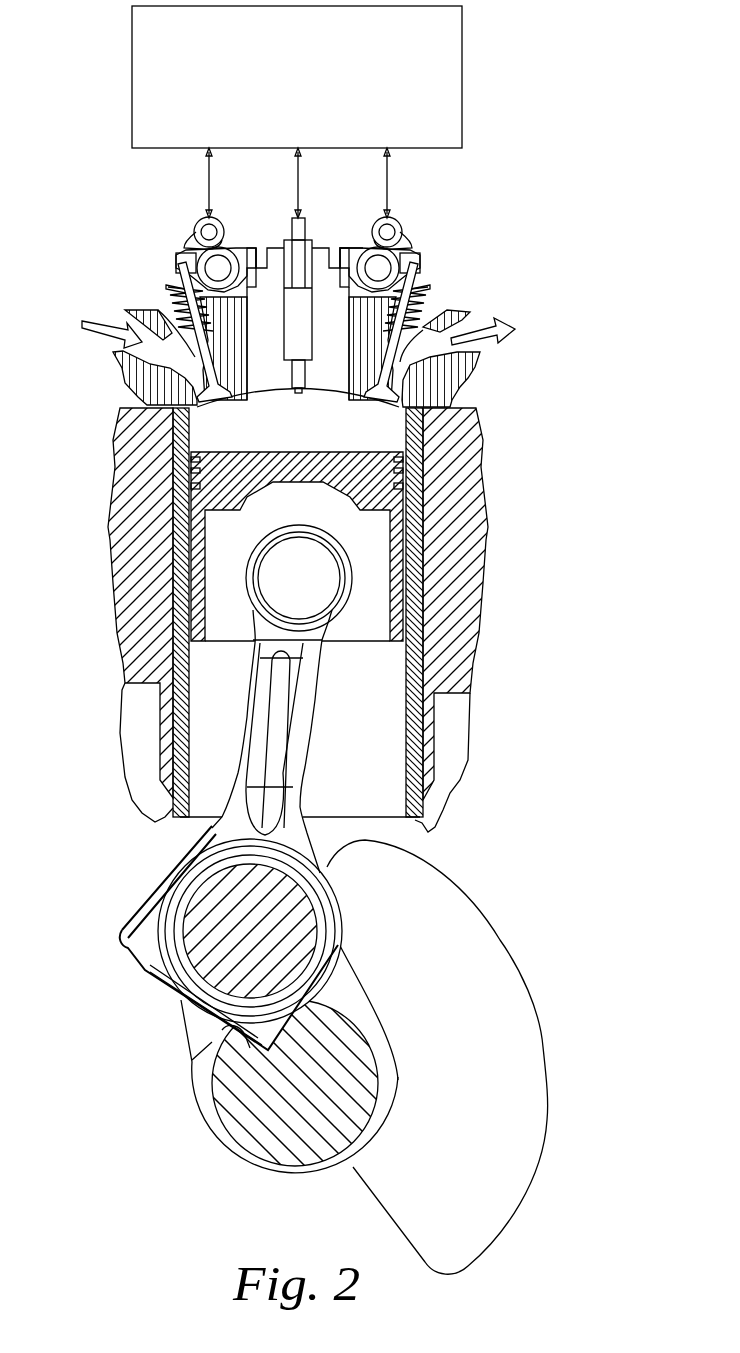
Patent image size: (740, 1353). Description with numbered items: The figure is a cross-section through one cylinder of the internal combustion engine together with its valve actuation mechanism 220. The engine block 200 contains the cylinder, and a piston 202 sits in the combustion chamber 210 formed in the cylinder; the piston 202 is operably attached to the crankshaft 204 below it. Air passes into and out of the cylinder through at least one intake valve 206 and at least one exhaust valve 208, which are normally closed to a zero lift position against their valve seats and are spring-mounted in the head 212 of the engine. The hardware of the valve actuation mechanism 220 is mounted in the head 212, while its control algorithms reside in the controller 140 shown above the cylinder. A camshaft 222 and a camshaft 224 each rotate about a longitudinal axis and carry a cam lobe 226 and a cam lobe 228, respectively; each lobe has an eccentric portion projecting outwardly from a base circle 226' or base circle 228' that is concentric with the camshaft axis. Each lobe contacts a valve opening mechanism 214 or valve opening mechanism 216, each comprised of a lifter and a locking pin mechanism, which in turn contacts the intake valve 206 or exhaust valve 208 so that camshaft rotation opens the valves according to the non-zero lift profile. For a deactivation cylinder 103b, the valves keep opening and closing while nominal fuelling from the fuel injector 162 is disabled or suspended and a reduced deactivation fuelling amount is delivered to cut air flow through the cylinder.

The controller 140 is at (128, 73).
The deactivation cylinder 103b is at (568, 240).
The fuel injector 162 is at (290, 323).
The valve actuation mechanism 220 is at (193, 213).
The camshaft 222 is at (214, 226).
The valve opening mechanism 214 is at (226, 254).
The cam lobe 226 is at (173, 323).
The base circle 226' is at (168, 230).
The head 212 is at (440, 203).
The camshaft 224 is at (382, 226).
The valve opening mechanism 216 is at (368, 254).
The cam lobe 228 is at (422, 323).
The base circle 228' is at (427, 230).
The intake valve 206 is at (195, 352).
The exhaust valve 208 is at (400, 362).
The engine block 200 is at (452, 660).
The combustion chamber 210 is at (175, 443).
The piston 202 is at (367, 550).
The crankshaft 204 is at (478, 1045).